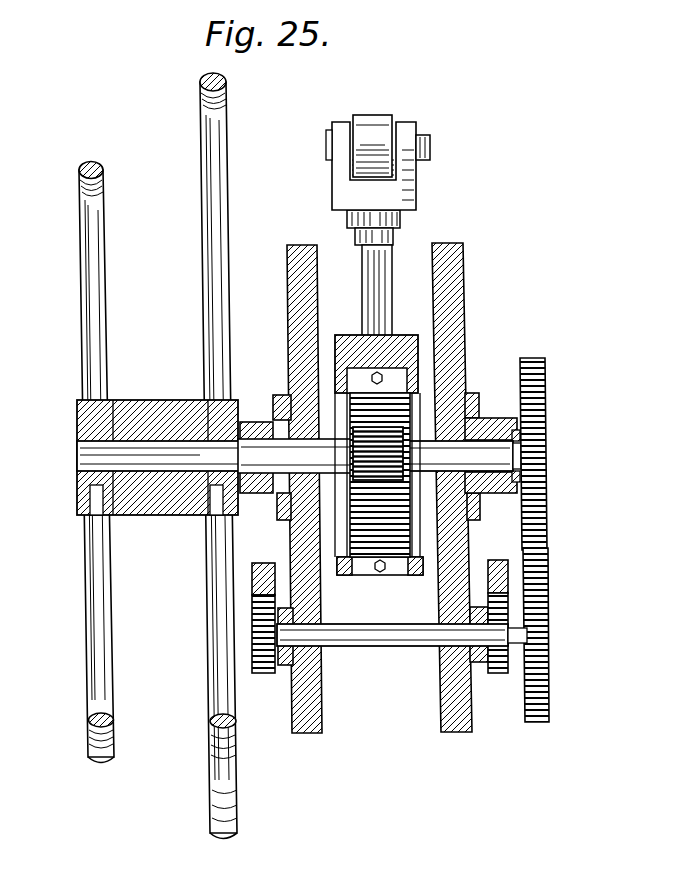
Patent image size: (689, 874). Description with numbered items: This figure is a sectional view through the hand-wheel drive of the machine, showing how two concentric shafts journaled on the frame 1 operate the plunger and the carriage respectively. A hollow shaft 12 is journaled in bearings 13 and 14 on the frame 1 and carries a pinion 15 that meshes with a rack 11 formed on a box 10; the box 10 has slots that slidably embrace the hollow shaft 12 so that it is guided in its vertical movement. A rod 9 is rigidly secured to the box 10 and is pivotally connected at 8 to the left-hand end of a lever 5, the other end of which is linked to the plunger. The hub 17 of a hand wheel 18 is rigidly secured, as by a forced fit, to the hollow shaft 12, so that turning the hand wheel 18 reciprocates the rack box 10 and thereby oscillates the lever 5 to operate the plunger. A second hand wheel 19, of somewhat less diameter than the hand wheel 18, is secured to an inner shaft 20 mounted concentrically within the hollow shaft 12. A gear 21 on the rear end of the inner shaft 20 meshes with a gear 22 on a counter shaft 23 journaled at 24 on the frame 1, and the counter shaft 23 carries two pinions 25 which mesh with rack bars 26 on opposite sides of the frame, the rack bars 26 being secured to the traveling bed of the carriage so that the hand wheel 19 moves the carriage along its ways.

The frame 1 is at (297, 262).
The lever 5 is at (372, 125).
The pivotal connection 8 is at (423, 143).
The rod 9 is at (392, 290).
The box 10 is at (418, 358).
The rack 11 is at (388, 530).
The hollow shaft 12 is at (288, 452).
The bearing 13 is at (252, 420).
The bearing 14 is at (488, 420).
The pinion 15 is at (372, 467).
The hub 17 is at (148, 410).
The hand wheel 18 is at (210, 190).
The hand wheel 19 is at (88, 300).
The shaft 20 is at (85, 460).
The gear 21 is at (533, 505).
The gear 22 is at (533, 608).
The counter shaft 23 is at (372, 648).
The journal 24 is at (286, 666).
The pinion 25 is at (265, 672).
The rack bar 26 is at (262, 568).